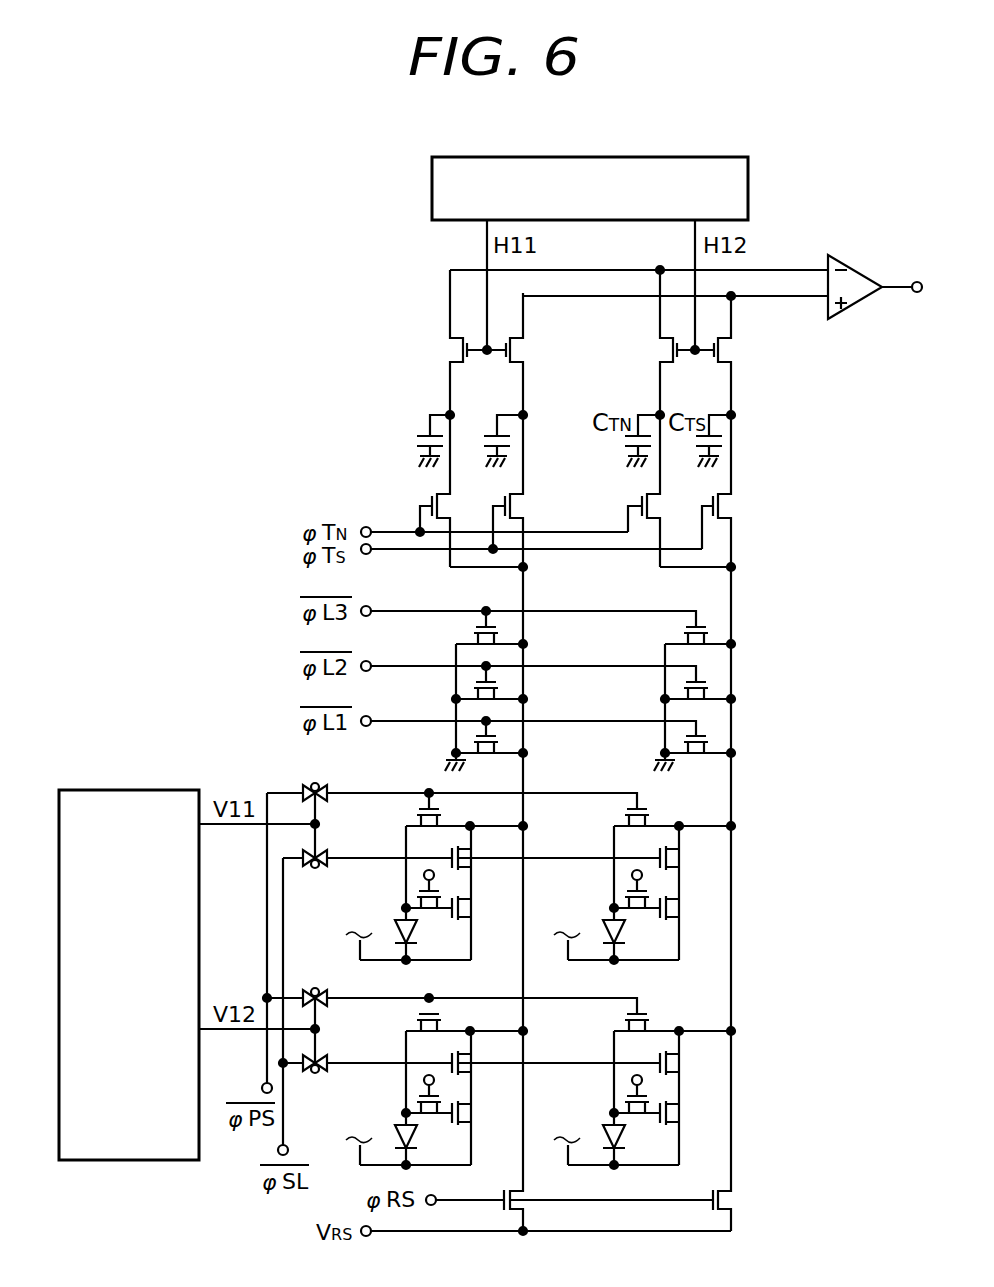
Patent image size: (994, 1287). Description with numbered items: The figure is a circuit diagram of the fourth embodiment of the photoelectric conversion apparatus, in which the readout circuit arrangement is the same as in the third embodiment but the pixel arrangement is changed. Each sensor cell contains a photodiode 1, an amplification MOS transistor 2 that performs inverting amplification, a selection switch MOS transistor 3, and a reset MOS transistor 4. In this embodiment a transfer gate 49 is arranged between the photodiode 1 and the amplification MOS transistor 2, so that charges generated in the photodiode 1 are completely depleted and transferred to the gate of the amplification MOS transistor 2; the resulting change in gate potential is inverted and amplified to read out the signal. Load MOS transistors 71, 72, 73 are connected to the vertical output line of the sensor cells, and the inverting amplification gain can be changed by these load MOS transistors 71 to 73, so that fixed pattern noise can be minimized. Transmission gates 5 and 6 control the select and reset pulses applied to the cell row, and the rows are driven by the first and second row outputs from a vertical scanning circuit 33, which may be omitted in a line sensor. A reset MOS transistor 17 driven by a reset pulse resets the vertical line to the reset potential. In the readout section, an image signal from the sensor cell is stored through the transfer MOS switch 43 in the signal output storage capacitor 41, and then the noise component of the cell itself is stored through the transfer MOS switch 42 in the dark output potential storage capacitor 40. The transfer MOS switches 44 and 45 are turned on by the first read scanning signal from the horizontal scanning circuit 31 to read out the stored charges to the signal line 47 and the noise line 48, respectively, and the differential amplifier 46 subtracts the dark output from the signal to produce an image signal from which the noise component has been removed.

The photodiode 1 is at (422, 934).
The amplification MOS transistor 2 is at (472, 920).
The selection switch MOS transistor 3 is at (472, 868).
The reset MOS transistor 4 is at (443, 815).
The transmission gate 5 is at (329, 857).
The transmission gate 6 is at (329, 792).
The reset MOS transistor 17 is at (518, 1200).
The horizontal scanning circuit 31 is at (698, 158).
The vertical scanning circuit 33 is at (163, 791).
The dark output potential storage capacitor 40 is at (409, 450).
The signal output storage capacitor 41 is at (515, 440).
The transfer MOS switch 42 is at (455, 503).
The transfer MOS switch 43 is at (529, 503).
The transfer MOS switch 44 is at (527, 347).
The transfer MOS switch 45 is at (452, 345).
The differential amplifier 46 is at (848, 262).
The signal line 47 is at (793, 305).
The noise line 48 is at (790, 270).
The transfer gate 49 is at (415, 893).
The load MOS transistor 71 is at (471, 749).
The load MOS transistor 72 is at (471, 694).
The load MOS transistor 73 is at (471, 640).